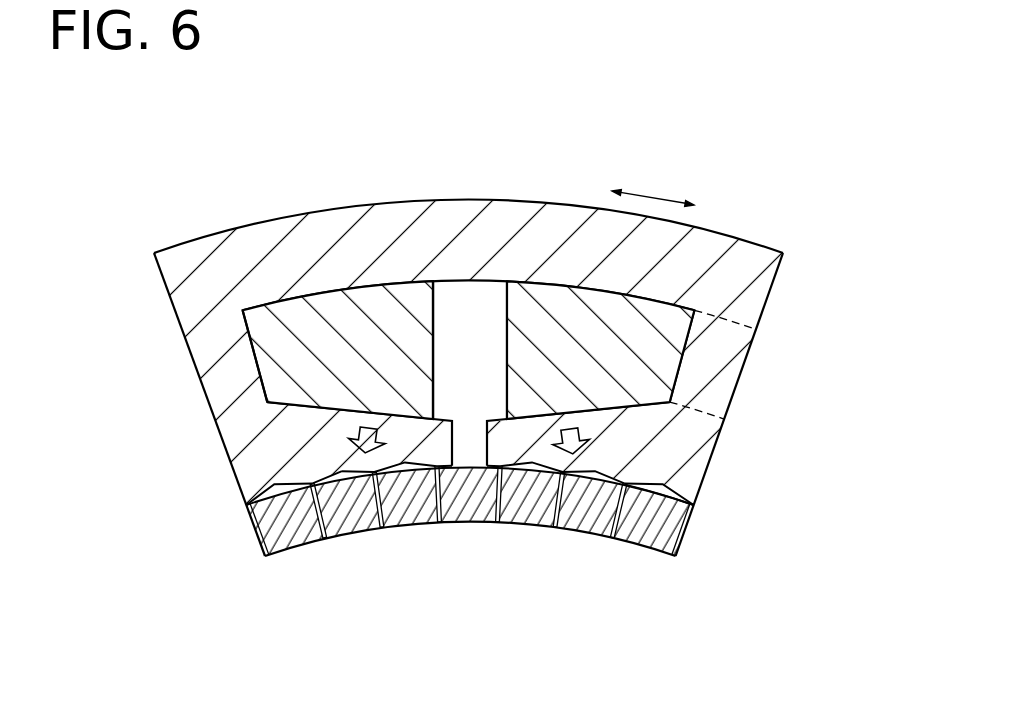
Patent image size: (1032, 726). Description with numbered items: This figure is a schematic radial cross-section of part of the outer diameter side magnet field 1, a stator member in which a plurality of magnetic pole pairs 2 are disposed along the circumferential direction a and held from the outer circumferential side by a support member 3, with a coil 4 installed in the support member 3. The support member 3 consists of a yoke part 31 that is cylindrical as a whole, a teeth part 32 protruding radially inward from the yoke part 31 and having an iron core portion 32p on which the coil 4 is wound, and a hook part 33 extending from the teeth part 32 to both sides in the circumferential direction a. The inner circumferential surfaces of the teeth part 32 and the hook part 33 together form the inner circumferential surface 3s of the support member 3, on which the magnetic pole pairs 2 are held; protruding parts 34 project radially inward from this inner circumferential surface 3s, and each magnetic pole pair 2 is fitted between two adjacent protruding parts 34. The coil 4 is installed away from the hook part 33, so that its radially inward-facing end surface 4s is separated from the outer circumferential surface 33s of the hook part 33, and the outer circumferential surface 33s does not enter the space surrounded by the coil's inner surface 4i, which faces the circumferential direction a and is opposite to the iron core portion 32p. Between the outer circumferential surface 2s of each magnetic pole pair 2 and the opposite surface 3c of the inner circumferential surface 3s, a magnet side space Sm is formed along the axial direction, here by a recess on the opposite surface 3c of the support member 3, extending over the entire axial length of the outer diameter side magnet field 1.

The outer diameter side magnet field 1 is at (752, 182).
The magnetic pole pair 2 is at (554, 544).
The outer circumferential surface 2s is at (602, 480).
The support member 3 is at (527, 411).
The inner circumferential surface 3s is at (247, 508).
The opposite surface 3c is at (357, 470).
The yoke part 31 is at (738, 273).
The teeth part 32 is at (768, 404).
The iron core portion 32p is at (765, 333).
The hook part 33 is at (538, 452).
The outer circumferential surface 33s is at (300, 406).
The protruding part 34 is at (687, 543).
The coil 4 is at (437, 282).
The inner surface 4i is at (243, 314).
The end surface 4s is at (434, 424).
The magnet side space Sm is at (660, 503).
The circumferential direction a is at (653, 188).